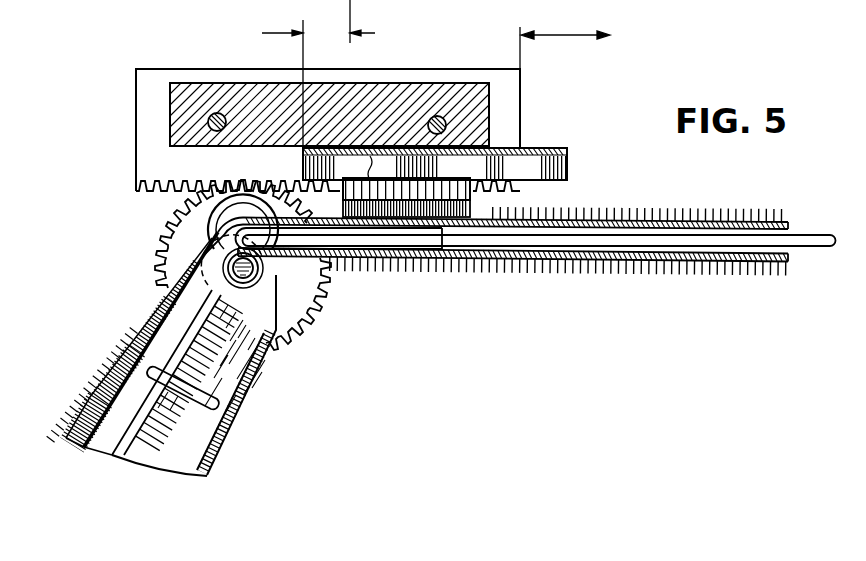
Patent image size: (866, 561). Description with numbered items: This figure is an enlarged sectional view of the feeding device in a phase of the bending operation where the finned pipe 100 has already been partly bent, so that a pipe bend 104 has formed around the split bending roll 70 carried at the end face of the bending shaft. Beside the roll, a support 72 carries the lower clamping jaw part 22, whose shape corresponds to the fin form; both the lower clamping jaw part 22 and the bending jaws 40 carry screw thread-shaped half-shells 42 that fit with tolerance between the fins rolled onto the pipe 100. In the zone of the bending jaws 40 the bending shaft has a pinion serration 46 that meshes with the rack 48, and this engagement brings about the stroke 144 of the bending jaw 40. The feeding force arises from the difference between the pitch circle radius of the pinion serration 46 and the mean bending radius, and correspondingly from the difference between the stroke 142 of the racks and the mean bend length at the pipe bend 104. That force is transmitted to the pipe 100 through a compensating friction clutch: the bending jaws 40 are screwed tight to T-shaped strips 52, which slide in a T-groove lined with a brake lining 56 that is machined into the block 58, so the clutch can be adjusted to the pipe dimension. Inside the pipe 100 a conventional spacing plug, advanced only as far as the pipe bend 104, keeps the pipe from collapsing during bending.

The lower clamping jaw part 22 is at (118, 348).
The bending jaws 40 is at (430, 186).
The screw thread-shaped half-shells 42 is at (470, 212).
The pinion serration 46 is at (160, 248).
The rack 48 is at (147, 83).
The T-shaped strips 52 is at (327, 167).
The brake lining 56 is at (530, 165).
The block 58 is at (400, 85).
The split bending roll 70 is at (276, 296).
The support 72 is at (157, 448).
The finned pipe 100 is at (665, 222).
The pipe bend 104 is at (208, 236).
The stroke of the racks 142 is at (565, 39).
The stroke of the bending jaw 144 is at (318, 90).